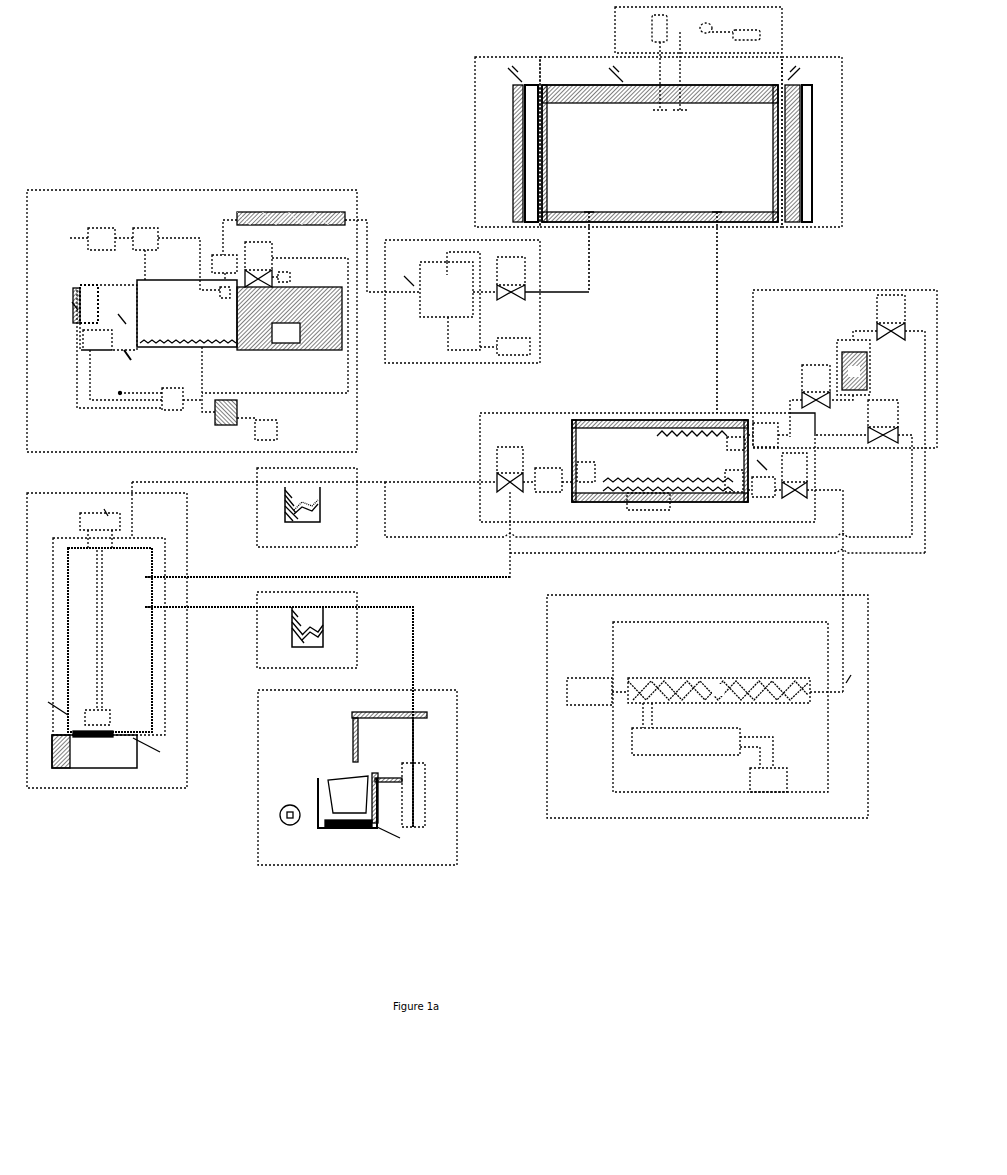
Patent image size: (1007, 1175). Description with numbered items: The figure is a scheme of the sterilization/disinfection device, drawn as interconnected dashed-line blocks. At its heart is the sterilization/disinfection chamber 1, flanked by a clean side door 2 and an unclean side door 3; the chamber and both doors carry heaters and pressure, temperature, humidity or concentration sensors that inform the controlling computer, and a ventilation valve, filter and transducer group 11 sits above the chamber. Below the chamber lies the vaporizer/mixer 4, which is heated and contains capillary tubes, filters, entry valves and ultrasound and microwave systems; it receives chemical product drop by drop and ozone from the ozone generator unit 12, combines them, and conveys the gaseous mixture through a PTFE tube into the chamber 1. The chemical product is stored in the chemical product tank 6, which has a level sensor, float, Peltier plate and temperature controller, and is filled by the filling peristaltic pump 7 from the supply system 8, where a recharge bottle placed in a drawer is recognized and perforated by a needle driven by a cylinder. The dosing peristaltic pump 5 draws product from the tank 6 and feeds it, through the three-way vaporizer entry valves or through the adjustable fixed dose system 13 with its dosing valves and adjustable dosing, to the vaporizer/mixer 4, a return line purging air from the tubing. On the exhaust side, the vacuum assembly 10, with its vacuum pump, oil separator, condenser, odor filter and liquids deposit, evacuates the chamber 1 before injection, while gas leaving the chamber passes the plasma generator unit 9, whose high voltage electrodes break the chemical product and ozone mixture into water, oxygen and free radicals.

The sterilization/disinfection chamber 1 is at (653, 235).
The clean side door 2 is at (812, 142).
The unclean side door 3 is at (507, 142).
The vaporizer/mixer 4 is at (614, 552).
The dosing peristaltic pump 5 is at (307, 507).
The chemical product tank 6 is at (107, 640).
The filling peristaltic pump 7 is at (307, 630).
The supply system 8 is at (357, 777).
The plasma generator unit 9 is at (487, 301).
The vacuum assembly with controlled temperature and heating/cooling system 10 is at (223, 321).
The ventilation system 11 is at (698, 58).
The ozone generator unit 12 is at (707, 706).
The adjustable fixed dose system 13 is at (845, 421).